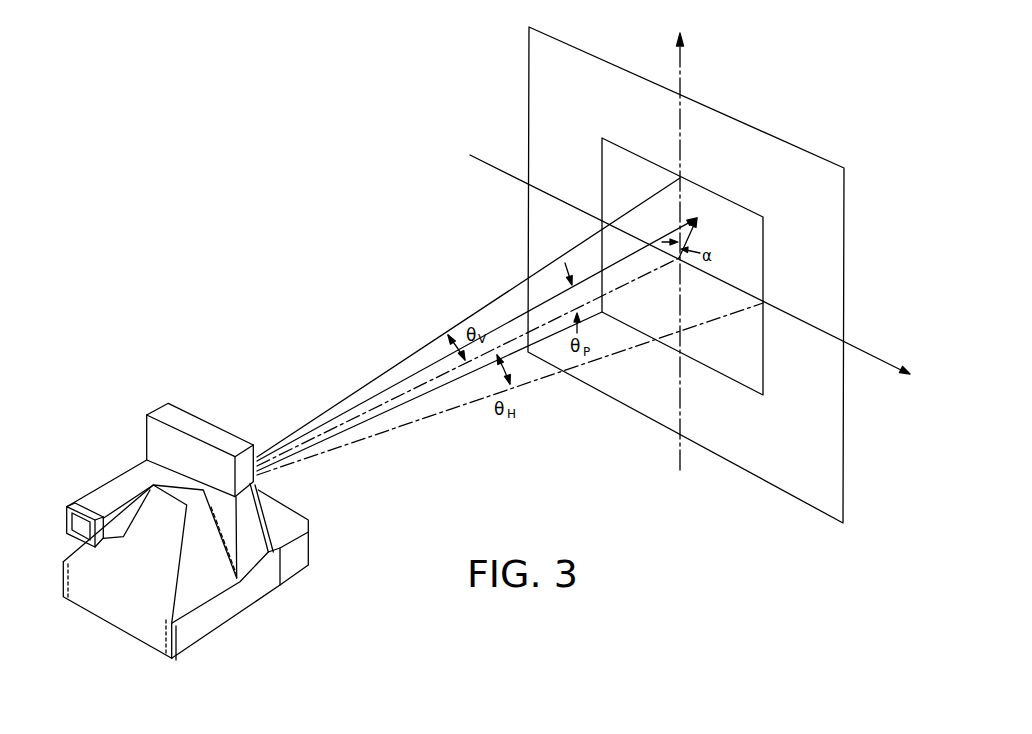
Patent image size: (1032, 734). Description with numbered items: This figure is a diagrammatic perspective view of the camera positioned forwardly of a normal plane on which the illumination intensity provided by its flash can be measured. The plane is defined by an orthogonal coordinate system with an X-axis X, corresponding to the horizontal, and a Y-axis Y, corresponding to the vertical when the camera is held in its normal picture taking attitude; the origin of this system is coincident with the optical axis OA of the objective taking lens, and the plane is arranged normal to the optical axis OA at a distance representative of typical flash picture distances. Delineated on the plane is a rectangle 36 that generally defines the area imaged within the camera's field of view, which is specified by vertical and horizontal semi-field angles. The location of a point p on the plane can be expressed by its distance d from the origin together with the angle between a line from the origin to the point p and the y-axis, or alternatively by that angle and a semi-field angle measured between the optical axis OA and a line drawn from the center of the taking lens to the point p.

The rectangle 36 is at (765, 233).
The X-axis X is at (690, 276).
The Y-axis Y is at (678, 237).
The point P(x, y) p is at (499, 336).
The optical axis OA is at (419, 387).
The distance d is at (692, 239).